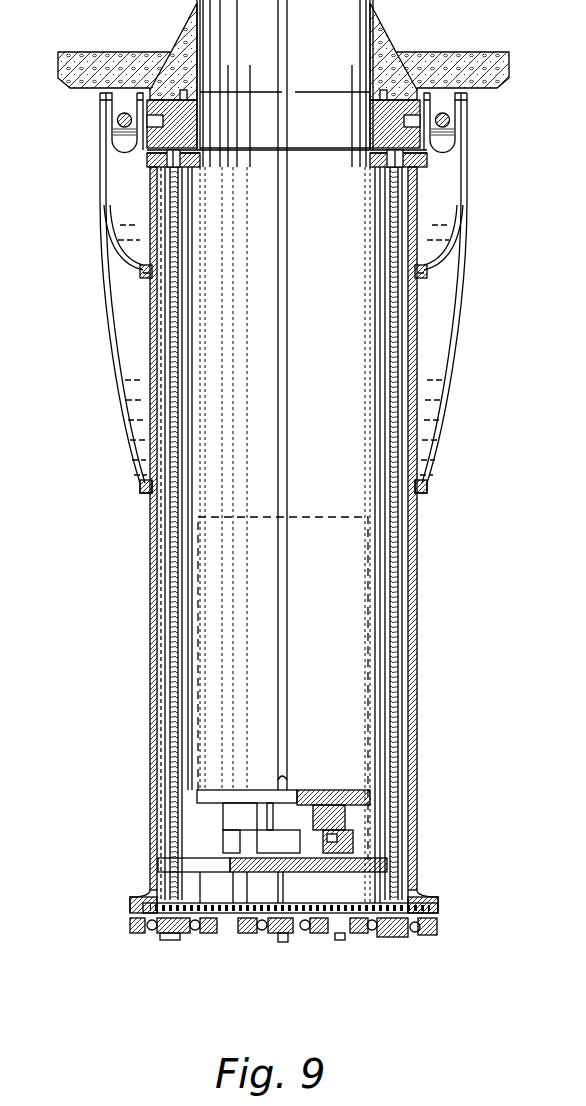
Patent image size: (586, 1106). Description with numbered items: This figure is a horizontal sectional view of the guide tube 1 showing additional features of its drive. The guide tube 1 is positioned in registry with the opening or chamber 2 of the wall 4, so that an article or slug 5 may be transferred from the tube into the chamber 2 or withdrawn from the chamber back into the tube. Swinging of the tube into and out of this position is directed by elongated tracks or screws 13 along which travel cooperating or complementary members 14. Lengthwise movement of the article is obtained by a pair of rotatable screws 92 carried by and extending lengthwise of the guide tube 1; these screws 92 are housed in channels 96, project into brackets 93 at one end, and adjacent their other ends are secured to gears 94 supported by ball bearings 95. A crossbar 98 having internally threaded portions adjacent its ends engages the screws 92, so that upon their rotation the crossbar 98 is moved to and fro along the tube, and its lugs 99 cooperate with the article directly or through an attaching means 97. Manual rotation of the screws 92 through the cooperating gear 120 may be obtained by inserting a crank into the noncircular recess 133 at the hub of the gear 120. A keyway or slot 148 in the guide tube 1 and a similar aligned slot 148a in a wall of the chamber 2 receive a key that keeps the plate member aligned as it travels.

The guide tube 1 is at (419, 653).
The opening or chamber 2 is at (292, 36).
The wall 4 is at (134, 49).
The article or slug 5 is at (340, 515).
The elongated tracks or screws 13 is at (118, 118).
The cooperating or complementary members 14 is at (115, 134).
The rotatable screws 92 is at (170, 607).
The brackets 93 is at (363, 160).
The gears 94 is at (141, 910).
The ball bearings 95 is at (150, 936).
The channels 96 is at (162, 648).
The attaching means 97 is at (337, 787).
The crossbar 98 is at (345, 871).
The lugs 99 is at (352, 848).
The cooperating gear 120 is at (340, 915).
The noncircular recess 133 is at (283, 942).
The keyway or slot 148 is at (290, 405).
The aligned slot 148a is at (283, 97).